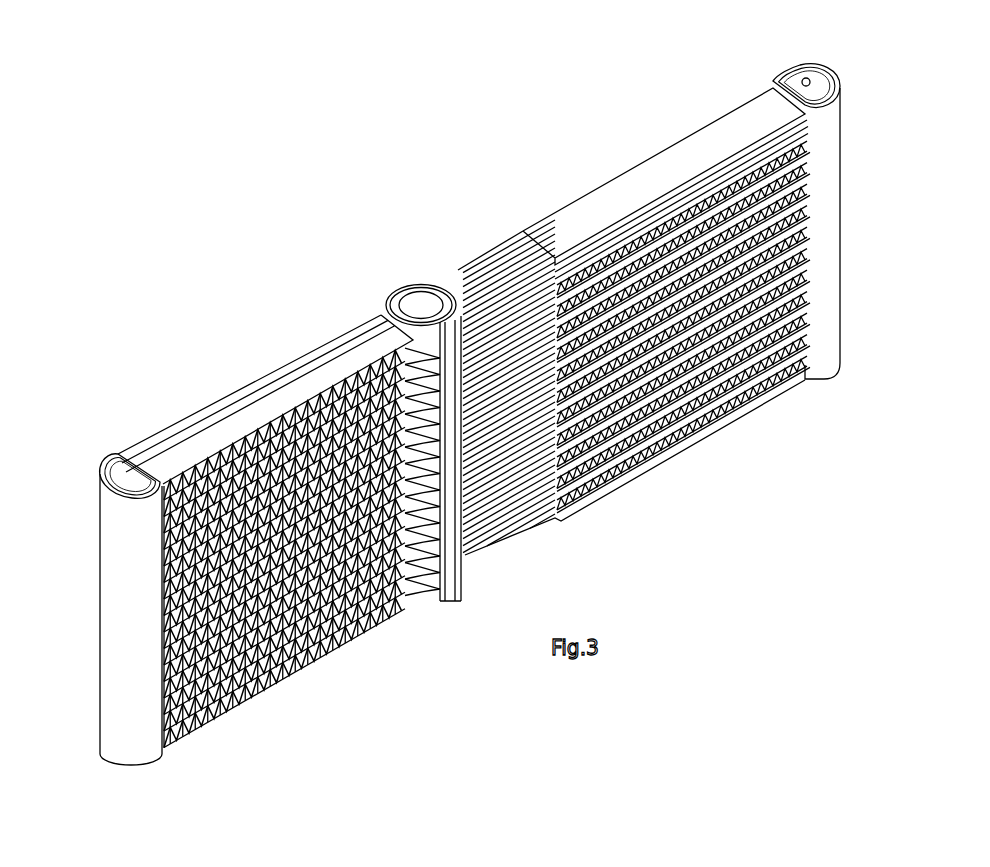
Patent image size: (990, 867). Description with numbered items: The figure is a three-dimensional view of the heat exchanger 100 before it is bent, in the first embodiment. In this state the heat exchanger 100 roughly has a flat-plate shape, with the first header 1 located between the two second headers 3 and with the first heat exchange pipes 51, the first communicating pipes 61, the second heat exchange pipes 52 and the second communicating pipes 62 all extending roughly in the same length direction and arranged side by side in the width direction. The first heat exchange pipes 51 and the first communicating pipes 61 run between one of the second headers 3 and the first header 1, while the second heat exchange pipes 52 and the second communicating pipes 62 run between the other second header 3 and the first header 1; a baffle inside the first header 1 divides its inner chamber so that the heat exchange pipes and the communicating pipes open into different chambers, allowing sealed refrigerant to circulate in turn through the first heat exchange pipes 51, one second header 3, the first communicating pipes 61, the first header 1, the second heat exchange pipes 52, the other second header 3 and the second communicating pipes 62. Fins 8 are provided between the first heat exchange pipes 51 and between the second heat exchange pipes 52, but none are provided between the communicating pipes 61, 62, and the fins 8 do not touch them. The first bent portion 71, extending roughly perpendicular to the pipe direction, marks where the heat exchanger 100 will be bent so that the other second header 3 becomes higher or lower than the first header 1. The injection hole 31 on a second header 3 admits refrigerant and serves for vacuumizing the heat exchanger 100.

The heat exchanger 100 is at (887, 125).
The first header 1 is at (416, 291).
The second header 3 is at (93, 455).
The injection hole 31 is at (790, 74).
The first heat exchange pipes 51 is at (213, 427).
The second heat exchange pipes 52 is at (492, 268).
The first communicating pipes 61 is at (247, 381).
The second communicating pipes 62 is at (518, 272).
The first bent portion 71 is at (512, 538).
The fins 8 is at (290, 666).